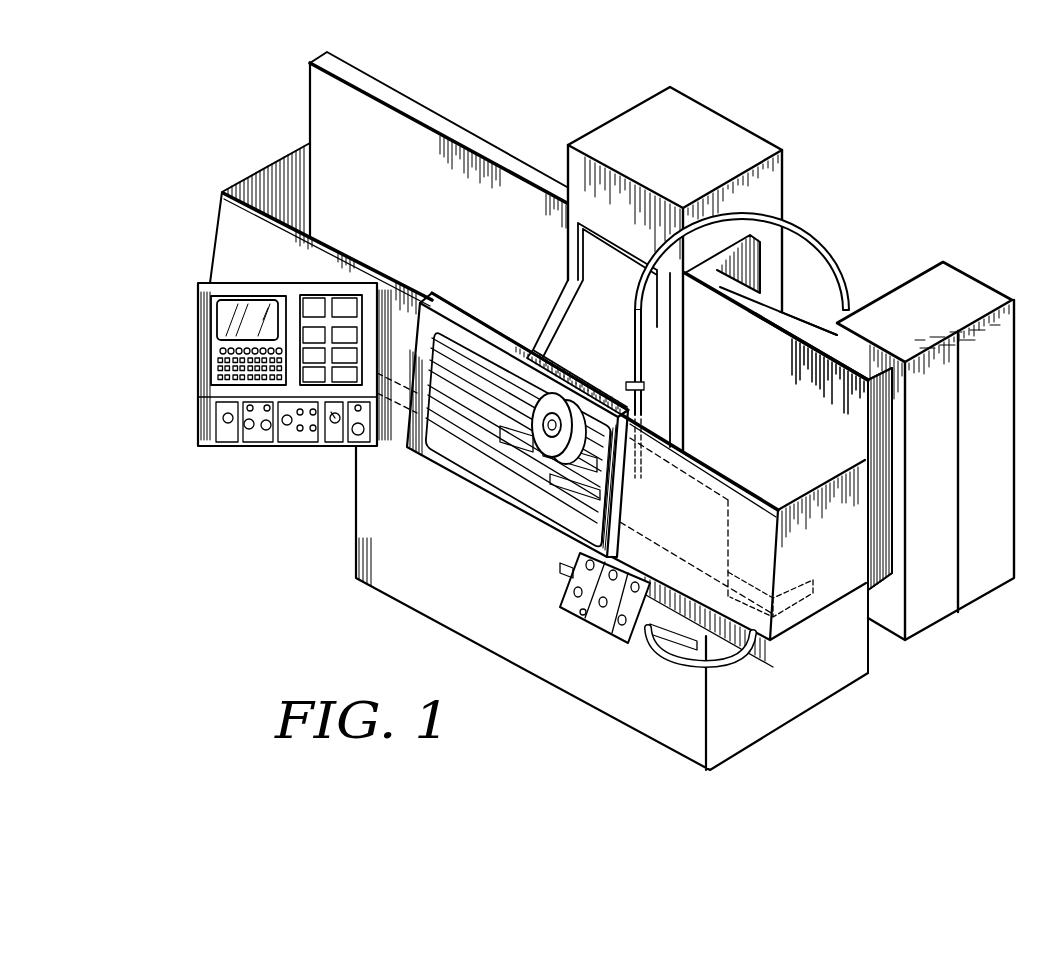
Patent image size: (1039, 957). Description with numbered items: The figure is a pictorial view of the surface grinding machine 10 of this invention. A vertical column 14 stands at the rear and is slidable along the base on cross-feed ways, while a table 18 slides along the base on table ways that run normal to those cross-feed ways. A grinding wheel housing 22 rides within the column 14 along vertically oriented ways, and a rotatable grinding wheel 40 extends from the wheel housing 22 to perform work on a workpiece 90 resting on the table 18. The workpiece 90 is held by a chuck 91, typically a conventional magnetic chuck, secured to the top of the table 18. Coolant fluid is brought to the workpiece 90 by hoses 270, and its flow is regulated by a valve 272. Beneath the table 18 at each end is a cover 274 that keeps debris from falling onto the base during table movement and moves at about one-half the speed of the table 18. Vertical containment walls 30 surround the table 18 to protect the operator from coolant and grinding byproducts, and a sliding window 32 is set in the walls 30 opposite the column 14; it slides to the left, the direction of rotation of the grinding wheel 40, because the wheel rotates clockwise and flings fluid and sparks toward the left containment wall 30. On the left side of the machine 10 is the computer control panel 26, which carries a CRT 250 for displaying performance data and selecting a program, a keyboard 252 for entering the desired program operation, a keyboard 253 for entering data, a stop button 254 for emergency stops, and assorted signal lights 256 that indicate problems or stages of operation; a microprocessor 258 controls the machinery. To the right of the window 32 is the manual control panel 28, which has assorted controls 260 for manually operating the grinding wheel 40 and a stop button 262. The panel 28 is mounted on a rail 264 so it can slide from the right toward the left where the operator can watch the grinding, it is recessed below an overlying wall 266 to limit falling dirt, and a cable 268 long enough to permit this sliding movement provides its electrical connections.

The surface grinding machine 10 is at (731, 90).
The vertical column 14 is at (782, 183).
The table 18 is at (690, 523).
The grinding wheel housing 22 is at (600, 350).
The computer control panel 26 is at (200, 386).
The manual control panel 28 is at (620, 644).
The vertical containment walls 30 is at (320, 119).
The sliding window 32 is at (480, 322).
The grinding wheel 40 is at (548, 420).
The workpiece 90 is at (575, 462).
The chuck 91 is at (563, 492).
The CRT 250 is at (240, 317).
The keyboard 252 is at (320, 316).
The keyboard 253 is at (218, 360).
The stop button 254 is at (350, 432).
The signal lights 256 is at (308, 358).
The microprocessor 258 is at (912, 533).
The controls 260 is at (580, 611).
The stop button 262 is at (607, 637).
The rail 264 is at (685, 640).
The overlying wall 266 is at (728, 662).
The cable 268 is at (759, 648).
The hoses 270 is at (630, 321).
The valve 272 is at (647, 386).
The cover 274 is at (800, 573).